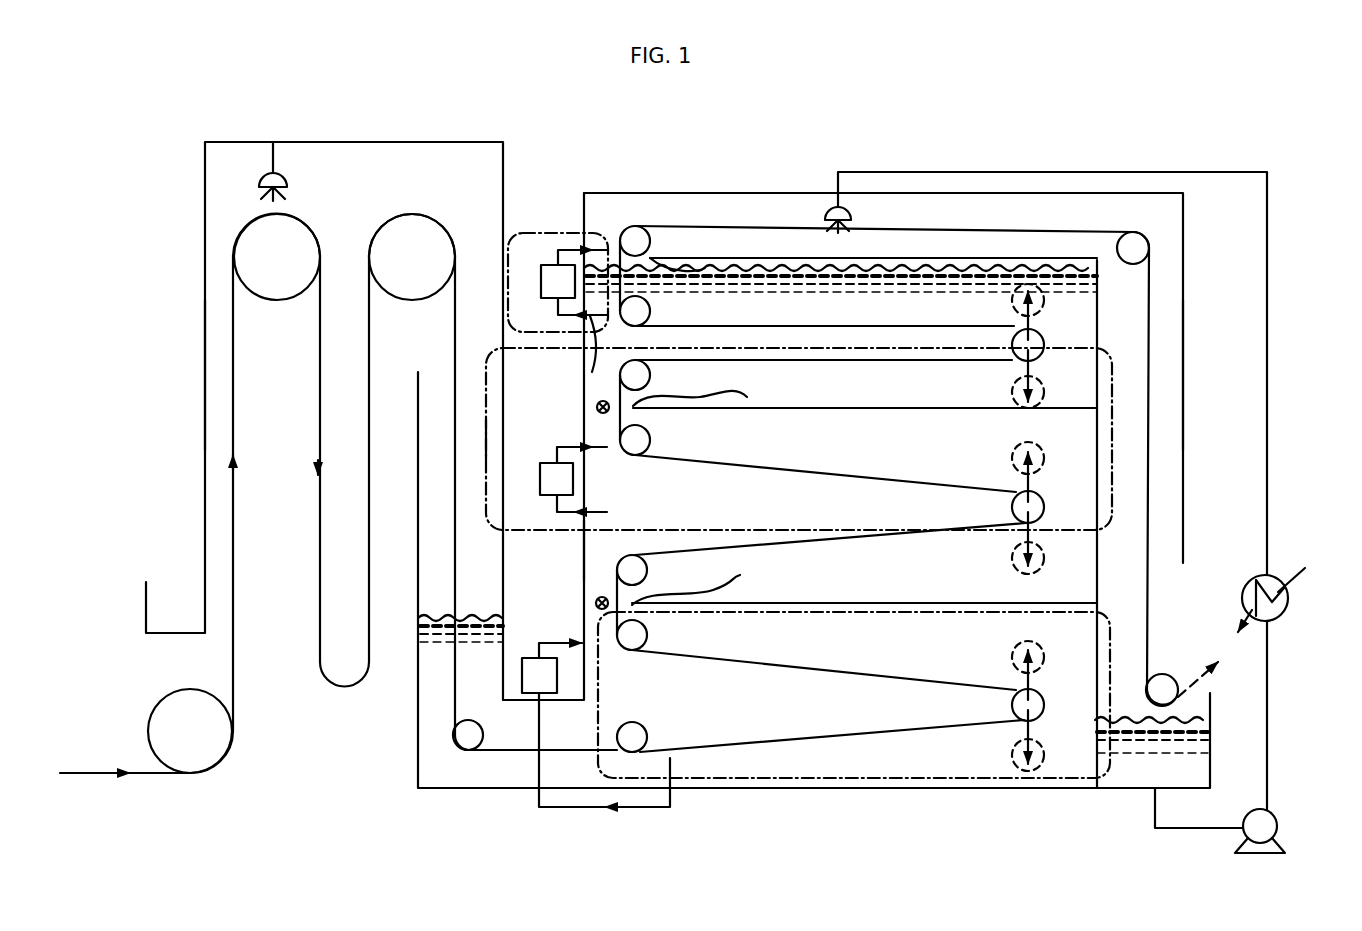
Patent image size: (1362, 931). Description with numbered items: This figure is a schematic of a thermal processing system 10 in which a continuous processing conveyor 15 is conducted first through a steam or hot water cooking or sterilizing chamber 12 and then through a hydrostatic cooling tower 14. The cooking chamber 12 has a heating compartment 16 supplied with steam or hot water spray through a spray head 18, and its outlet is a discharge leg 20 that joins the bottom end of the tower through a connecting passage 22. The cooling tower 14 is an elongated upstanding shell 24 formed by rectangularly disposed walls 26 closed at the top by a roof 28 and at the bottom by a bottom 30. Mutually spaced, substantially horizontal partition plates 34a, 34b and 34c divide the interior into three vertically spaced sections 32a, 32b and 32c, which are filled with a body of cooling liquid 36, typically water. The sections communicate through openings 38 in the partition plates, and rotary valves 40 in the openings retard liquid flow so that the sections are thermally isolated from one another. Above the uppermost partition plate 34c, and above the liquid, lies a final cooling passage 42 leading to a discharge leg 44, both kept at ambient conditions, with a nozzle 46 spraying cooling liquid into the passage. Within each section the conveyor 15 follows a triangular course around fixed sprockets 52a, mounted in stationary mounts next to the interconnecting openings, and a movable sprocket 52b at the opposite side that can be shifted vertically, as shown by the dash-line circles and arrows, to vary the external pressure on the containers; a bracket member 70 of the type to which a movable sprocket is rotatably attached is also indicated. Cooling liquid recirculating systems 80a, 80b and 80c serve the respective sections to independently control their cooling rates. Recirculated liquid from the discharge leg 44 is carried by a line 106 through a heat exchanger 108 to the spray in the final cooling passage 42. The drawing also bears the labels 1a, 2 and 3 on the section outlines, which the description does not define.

The thermal processing system 10 is at (840, 158).
The cooking or sterilizing chamber 12 is at (357, 140).
The hydrostatic cooling tower 14 is at (685, 191).
The continuous processing conveyor 15 is at (234, 647).
The heating compartment 16 is at (213, 185).
The spray head 18 is at (281, 176).
The discharge leg 20 is at (475, 566).
The connecting passage 22 is at (492, 763).
The elongated upstanding shell 24 is at (580, 365).
The walls 26 is at (583, 549).
The roof 28 is at (975, 172).
The bottom 30 is at (862, 790).
The section 32a is at (808, 723).
The section 32b is at (910, 463).
The section 32c is at (885, 323).
The partition plate 34a is at (837, 625).
The partition plate 34b is at (755, 410).
The partition plate 34c is at (868, 262).
The body of cooling liquid 36 is at (1098, 285).
The openings 38 is at (700, 270).
The rotary valves 40 is at (597, 408).
The final cooling passage 42 is at (743, 207).
The discharge leg 44 is at (1163, 390).
The nozzle 46 is at (853, 212).
The fixed sprockets 52a is at (650, 243).
The movable sprockets 52b is at (1044, 342).
The movable bracket member 70 is at (607, 351).
The cooling liquid recirculating system 80a is at (588, 813).
The cooling liquid recirculating system 80b is at (596, 512).
The cooling liquid recirculating system 80c is at (577, 247).
The line 106 is at (1268, 790).
The heat exchanger 108 is at (1283, 575).
The first treatment zone 1a is at (560, 233).
The second treatment zone 2 is at (1122, 436).
The third treatment zone 3 is at (1112, 647).